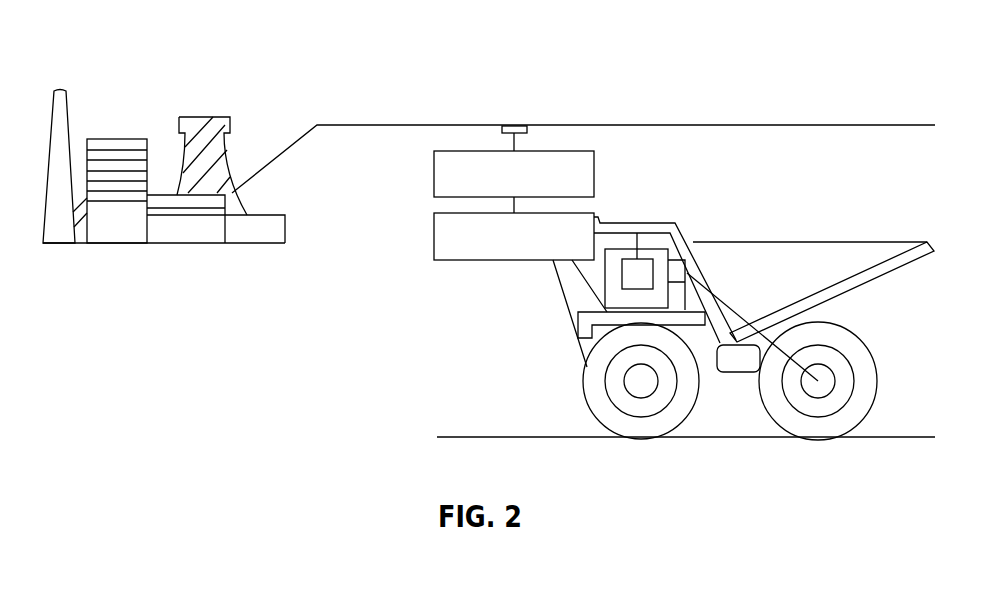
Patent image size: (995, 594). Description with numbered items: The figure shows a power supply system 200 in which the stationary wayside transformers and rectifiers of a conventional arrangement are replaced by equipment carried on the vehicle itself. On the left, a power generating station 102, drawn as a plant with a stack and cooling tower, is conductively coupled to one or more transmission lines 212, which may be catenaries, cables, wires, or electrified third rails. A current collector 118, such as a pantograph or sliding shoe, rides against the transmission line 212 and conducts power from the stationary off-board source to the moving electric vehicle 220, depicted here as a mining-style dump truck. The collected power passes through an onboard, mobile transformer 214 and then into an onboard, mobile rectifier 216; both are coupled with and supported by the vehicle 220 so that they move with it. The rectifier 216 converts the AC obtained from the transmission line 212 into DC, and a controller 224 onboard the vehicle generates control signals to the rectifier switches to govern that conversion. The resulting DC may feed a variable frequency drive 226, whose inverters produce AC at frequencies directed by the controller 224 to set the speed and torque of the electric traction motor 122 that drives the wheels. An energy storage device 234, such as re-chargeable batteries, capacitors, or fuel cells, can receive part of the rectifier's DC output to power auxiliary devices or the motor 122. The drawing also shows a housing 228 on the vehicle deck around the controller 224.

The power generating station 102 is at (150, 270).
The power supply system 200 is at (935, 72).
The transmission line 212 is at (780, 123).
The current collector 118 is at (546, 134).
The onboard, mobile transformer 214 is at (433, 175).
The onboard, mobile rectifier 216 is at (433, 237).
The controller 224 is at (643, 258).
The controller housing 228 is at (627, 310).
The energy storage device 234 is at (687, 273).
The variable frequency drive 226 is at (677, 293).
The electric vehicle 220 is at (874, 300).
The electric traction motor 122 is at (818, 398).